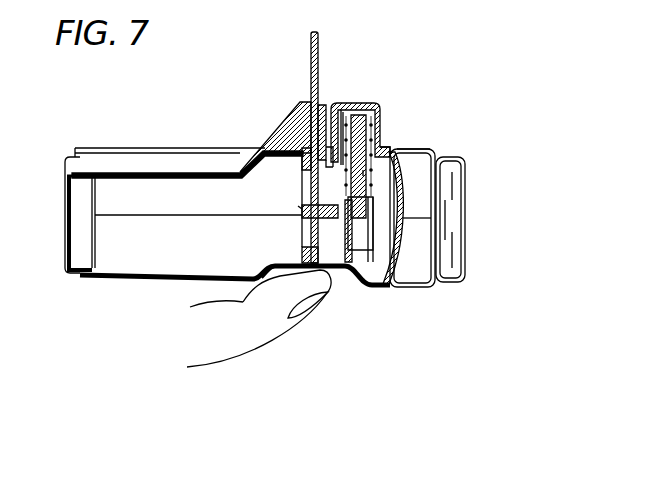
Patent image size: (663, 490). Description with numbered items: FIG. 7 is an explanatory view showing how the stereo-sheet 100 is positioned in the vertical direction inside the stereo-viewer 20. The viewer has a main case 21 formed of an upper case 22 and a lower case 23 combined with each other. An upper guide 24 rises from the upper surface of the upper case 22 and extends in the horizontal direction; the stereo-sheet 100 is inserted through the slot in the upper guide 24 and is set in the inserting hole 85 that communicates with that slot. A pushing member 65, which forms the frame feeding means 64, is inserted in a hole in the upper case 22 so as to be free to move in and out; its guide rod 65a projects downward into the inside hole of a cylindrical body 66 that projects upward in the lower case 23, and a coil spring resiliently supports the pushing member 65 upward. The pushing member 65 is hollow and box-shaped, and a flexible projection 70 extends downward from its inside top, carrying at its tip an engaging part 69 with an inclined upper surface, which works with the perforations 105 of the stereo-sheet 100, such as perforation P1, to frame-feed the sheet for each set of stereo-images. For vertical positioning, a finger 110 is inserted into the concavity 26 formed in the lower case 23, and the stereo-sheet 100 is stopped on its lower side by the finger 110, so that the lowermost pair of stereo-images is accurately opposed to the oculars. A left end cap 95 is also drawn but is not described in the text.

The stereo-viewer 20 is at (448, 128).
The main case 21 is at (192, 173).
The upper case 22 is at (128, 173).
The lower case 23 is at (132, 284).
The upper guide 24 is at (298, 110).
The concavity 26 is at (330, 273).
The frame feeding means 64 is at (388, 132).
The pushing member 65 is at (353, 103).
The guide rod 65a is at (363, 173).
The cylindrical body 66 is at (374, 237).
The engaging part 69 is at (348, 273).
The projection 70 is at (368, 207).
The inserting hole 85 is at (318, 190).
The end cap 95 is at (66, 231).
The stereo-sheet 100 is at (310, 42).
The perforations 105 is at (323, 110).
The finger 110 is at (284, 333).
The perforation P1 is at (300, 207).